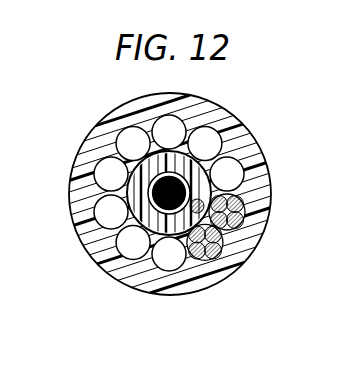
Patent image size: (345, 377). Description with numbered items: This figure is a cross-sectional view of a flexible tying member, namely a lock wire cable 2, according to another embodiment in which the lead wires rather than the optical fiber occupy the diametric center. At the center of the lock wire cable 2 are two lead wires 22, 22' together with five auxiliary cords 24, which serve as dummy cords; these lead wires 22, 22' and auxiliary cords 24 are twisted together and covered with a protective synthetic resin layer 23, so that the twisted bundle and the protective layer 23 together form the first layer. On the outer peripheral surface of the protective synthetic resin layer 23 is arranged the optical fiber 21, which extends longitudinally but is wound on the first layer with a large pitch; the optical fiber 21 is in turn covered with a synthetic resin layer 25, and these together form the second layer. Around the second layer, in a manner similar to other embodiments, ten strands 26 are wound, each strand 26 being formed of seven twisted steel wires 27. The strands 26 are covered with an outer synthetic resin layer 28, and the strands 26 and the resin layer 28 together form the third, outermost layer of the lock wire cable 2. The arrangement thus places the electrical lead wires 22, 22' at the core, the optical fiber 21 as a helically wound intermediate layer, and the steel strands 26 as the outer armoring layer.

The lock wire cable 2 is at (83, 129).
The optical fiber 21 is at (233, 165).
The lead wire 22 is at (257, 149).
The lead wire 22' is at (118, 274).
The protective synthetic resin layer 23 is at (160, 226).
The auxiliary cord 24 is at (191, 212).
The synthetic resin layer 25 is at (160, 213).
The strand 26 is at (207, 135).
The steel wire 27 is at (246, 202).
The synthetic resin layer 28 is at (192, 276).